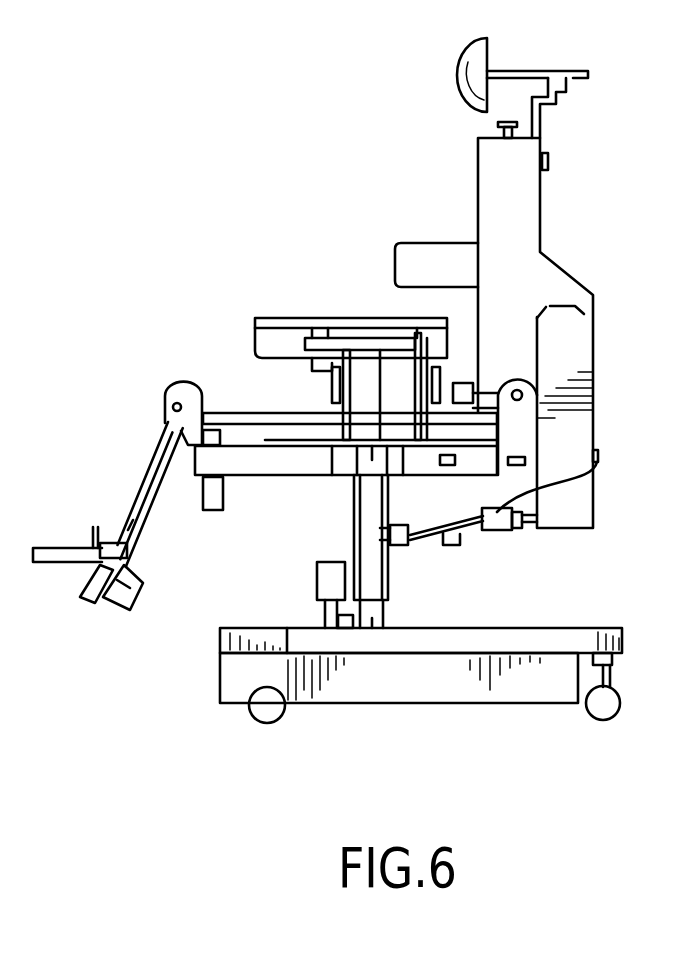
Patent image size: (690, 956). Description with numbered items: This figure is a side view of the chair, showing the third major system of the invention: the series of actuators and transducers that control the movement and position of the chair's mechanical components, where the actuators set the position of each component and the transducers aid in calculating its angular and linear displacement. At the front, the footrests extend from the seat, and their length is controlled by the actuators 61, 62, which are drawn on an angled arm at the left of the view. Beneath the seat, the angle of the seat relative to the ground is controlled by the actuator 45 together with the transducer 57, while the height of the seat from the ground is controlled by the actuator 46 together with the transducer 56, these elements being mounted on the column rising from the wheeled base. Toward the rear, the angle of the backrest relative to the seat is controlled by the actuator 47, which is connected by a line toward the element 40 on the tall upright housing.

The control unit 40 is at (597, 455).
The actuator 45 is at (405, 547).
The actuator 46 is at (317, 590).
The actuator 47 is at (518, 530).
The transducer 56 is at (372, 618).
The transducer 57 is at (457, 545).
The actuator 61 is at (113, 540).
The actuator 62 is at (117, 496).